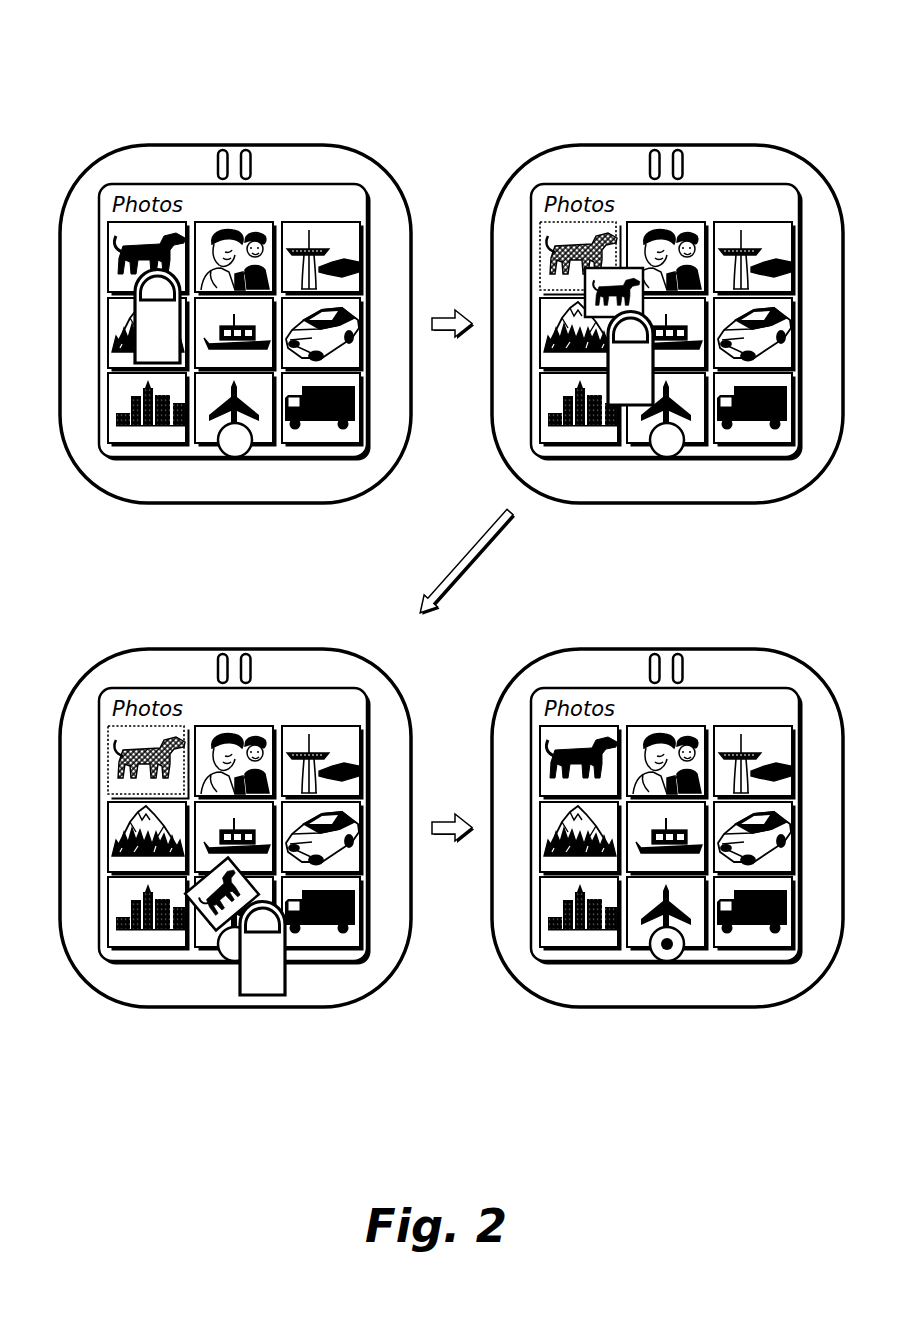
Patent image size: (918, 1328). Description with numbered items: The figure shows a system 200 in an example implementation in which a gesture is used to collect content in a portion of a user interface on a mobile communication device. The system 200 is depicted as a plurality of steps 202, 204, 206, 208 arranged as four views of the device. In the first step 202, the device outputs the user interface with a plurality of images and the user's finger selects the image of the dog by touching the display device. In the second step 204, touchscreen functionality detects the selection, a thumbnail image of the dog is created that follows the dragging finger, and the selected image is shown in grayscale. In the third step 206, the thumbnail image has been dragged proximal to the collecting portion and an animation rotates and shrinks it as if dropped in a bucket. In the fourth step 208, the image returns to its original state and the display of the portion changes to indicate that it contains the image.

The system 200 is at (155, 63).
The first step 202 is at (140, 133).
The second step 204 is at (527, 133).
The third step 206 is at (123, 638).
The fourth step 208 is at (550, 638).